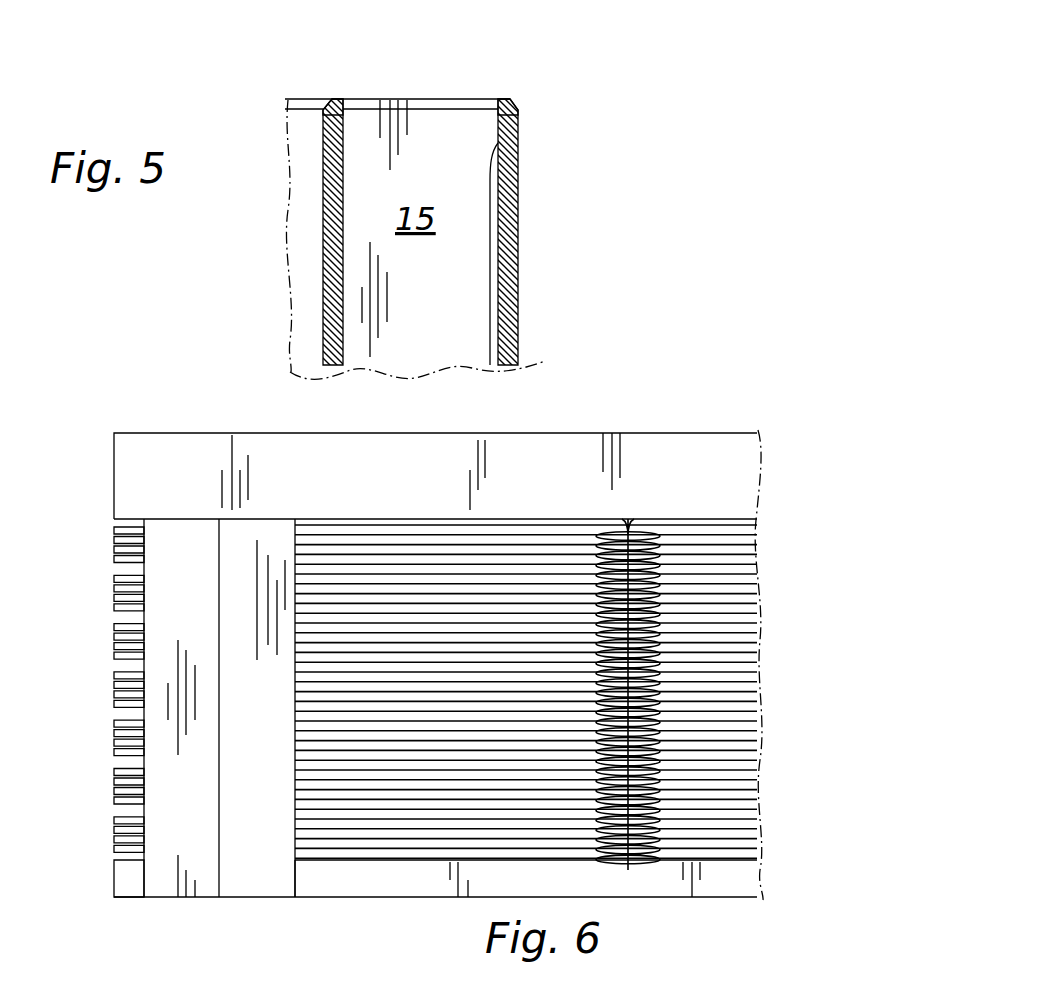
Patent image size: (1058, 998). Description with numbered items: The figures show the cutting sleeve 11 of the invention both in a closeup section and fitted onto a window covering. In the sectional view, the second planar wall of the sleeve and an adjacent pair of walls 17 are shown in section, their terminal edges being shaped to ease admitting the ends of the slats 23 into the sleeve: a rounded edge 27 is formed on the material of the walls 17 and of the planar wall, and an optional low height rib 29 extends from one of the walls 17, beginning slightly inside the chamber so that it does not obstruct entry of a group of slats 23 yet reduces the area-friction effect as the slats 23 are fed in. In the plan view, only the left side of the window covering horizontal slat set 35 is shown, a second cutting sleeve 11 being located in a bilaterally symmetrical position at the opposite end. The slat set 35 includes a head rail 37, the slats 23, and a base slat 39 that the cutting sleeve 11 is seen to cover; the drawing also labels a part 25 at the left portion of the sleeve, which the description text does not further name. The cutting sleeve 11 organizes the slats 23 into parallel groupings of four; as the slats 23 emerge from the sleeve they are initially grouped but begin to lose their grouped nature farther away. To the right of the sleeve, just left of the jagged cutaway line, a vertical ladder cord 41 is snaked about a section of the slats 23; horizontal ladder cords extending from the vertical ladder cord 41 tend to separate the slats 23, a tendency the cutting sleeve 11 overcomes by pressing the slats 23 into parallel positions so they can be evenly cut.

In FIG. 6, the cutting sleeve 11 is at (253, 872).
In FIG. 5, the walls 17 is at (323, 233).
In FIG. 6, the slats 23 is at (114, 703).
In FIG. 6, the header plate 25 is at (219, 790).
In FIG. 5, the rounded edge 27 is at (342, 99).
In FIG. 5, the low height rib 29 is at (491, 200).
In FIG. 6, the window covering horizontal slat set 35 is at (731, 396).
In FIG. 6, the head rail 37 is at (146, 440).
In FIG. 6, the base slat 39 is at (358, 872).
In FIG. 6, the vertical ladder cord 41 is at (665, 590).